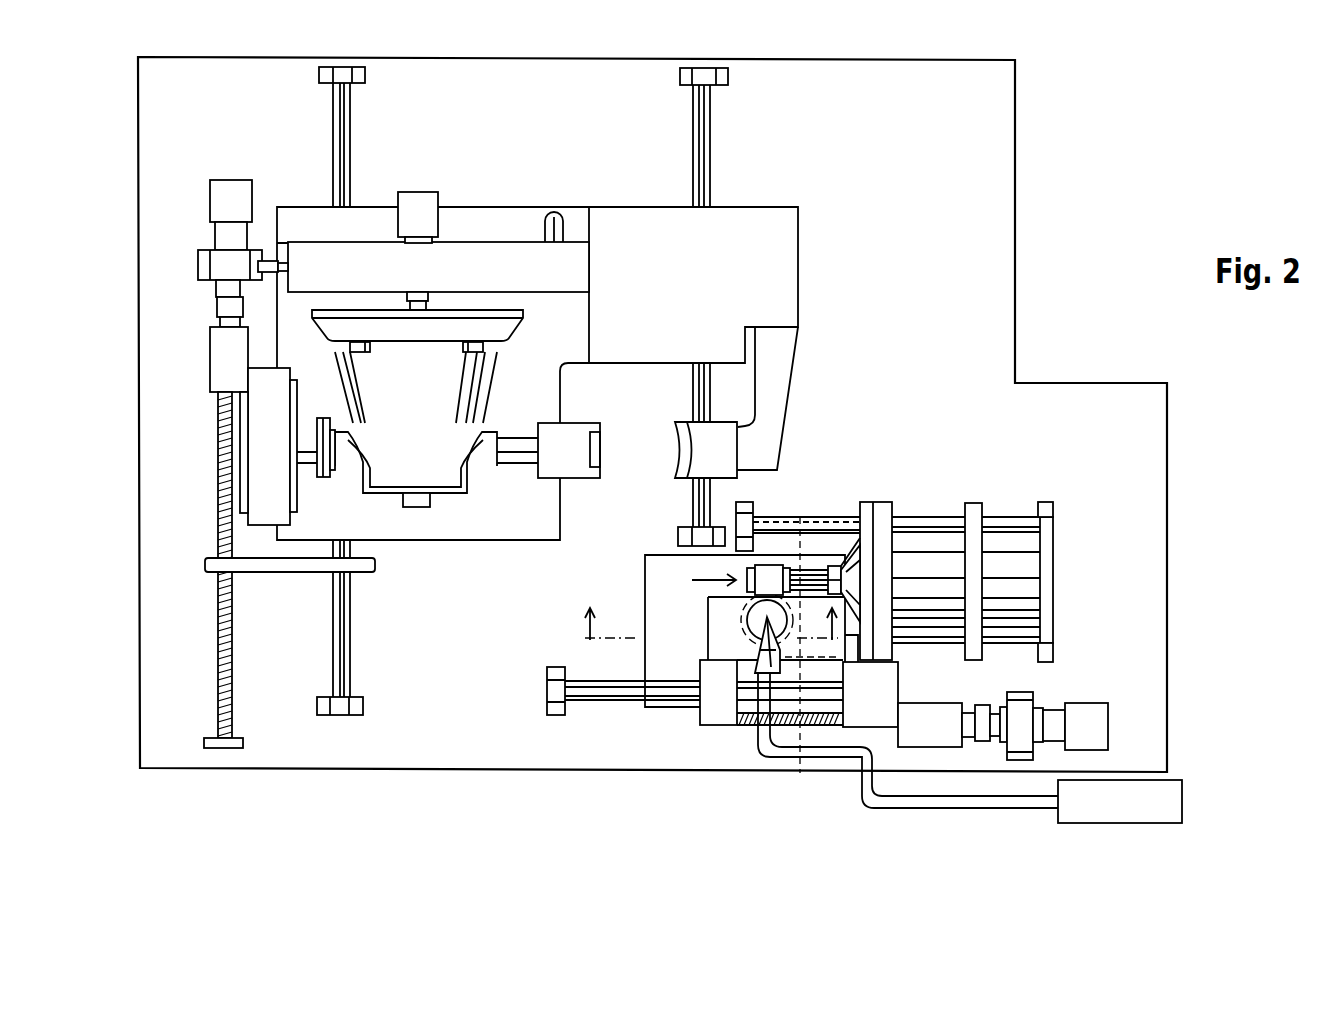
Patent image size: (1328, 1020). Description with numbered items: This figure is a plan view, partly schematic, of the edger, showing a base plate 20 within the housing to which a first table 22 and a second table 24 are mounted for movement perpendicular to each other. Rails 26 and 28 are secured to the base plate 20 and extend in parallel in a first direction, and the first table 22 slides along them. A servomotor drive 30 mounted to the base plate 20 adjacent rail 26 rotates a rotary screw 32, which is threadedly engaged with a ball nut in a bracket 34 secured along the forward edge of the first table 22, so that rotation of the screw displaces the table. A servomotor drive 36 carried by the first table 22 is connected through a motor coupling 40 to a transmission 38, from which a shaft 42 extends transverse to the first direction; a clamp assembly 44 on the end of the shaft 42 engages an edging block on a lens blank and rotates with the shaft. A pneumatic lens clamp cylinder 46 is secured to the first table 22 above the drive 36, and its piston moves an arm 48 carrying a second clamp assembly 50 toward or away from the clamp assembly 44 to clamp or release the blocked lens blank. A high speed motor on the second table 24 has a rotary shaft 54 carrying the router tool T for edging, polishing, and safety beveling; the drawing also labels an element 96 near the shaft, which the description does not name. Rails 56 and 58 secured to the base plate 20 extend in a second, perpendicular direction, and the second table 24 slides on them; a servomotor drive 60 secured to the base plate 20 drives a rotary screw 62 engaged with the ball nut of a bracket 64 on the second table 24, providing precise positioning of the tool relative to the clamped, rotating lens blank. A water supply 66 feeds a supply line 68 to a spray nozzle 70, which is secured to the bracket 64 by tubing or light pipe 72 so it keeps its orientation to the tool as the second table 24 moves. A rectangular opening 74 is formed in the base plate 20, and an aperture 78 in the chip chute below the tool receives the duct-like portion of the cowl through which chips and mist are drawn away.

The base plate 20 is at (993, 220).
The first table 22 is at (497, 213).
The second table 24 is at (1008, 513).
The rail 26 is at (350, 130).
The rail 28 is at (712, 130).
The servomotor drive 30 is at (196, 224).
The rotary screw 32 is at (220, 505).
The bracket 34 is at (375, 567).
The servomotor drive 36 is at (412, 195).
The transmission 38 is at (478, 390).
The motor coupling 40 is at (427, 297).
The shaft 42 is at (522, 463).
The clamp assembly 44 is at (575, 427).
The pneumatic lens clamp cylinder 46 is at (350, 253).
The arm 48 is at (780, 384).
The second clamp assembly 50 is at (683, 453).
The rotary shaft 54 is at (845, 558).
The rail 56 is at (773, 517).
The rail 58 is at (628, 700).
The servomotor drive 60 is at (1078, 702).
The rotary screw 62 is at (748, 728).
The bracket 64 is at (853, 733).
The water supply 66 is at (1100, 808).
The supply line 68 is at (955, 805).
The spray nozzle 70 is at (755, 640).
The tubing or light pipe 72 is at (808, 757).
The rectangular opening 74 is at (655, 610).
The aperture 78 is at (745, 627).
The nut 96 is at (835, 566).